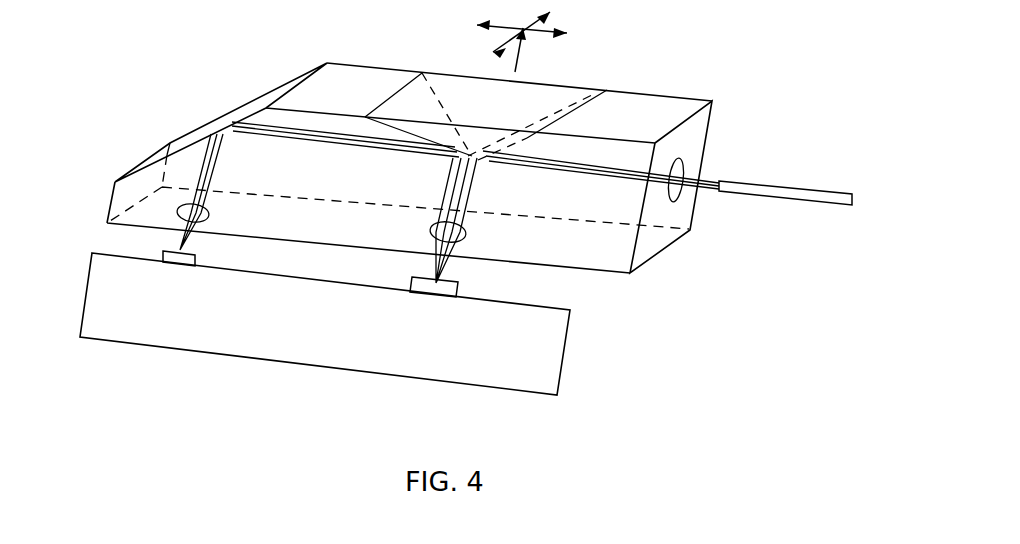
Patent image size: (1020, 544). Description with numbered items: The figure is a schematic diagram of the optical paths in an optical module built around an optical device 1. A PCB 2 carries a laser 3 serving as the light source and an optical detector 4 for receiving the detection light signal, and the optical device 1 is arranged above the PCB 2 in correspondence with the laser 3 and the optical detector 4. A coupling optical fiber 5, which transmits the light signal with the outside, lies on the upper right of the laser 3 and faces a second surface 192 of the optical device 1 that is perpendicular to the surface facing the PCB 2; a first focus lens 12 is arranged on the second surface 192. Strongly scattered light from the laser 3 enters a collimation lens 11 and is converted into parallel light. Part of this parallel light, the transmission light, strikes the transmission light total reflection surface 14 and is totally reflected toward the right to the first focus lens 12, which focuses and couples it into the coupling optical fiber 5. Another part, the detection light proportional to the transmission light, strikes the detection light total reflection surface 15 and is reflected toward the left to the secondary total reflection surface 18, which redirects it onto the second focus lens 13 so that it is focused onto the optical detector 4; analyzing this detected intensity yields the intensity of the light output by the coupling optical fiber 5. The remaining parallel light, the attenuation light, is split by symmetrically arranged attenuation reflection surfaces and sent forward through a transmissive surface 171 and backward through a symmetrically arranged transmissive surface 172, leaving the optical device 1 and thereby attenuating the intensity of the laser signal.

The optical device 1 is at (118, 103).
The PCB 2 is at (500, 378).
The laser 3 is at (457, 290).
The optical detector 4 is at (160, 257).
The coupling optical fiber 5 is at (773, 197).
The collimation lens 11 is at (463, 237).
The first focus lens 12 is at (685, 173).
The second focus lens 13 is at (180, 220).
The transmission light total reflection surface 14 is at (553, 118).
The detection light total reflection surface 15 is at (418, 103).
The secondary total reflection surface 18 is at (230, 115).
The transmissive surface 171 is at (598, 253).
The transmissive surface 172 is at (628, 103).
The second surface 192 is at (702, 138).